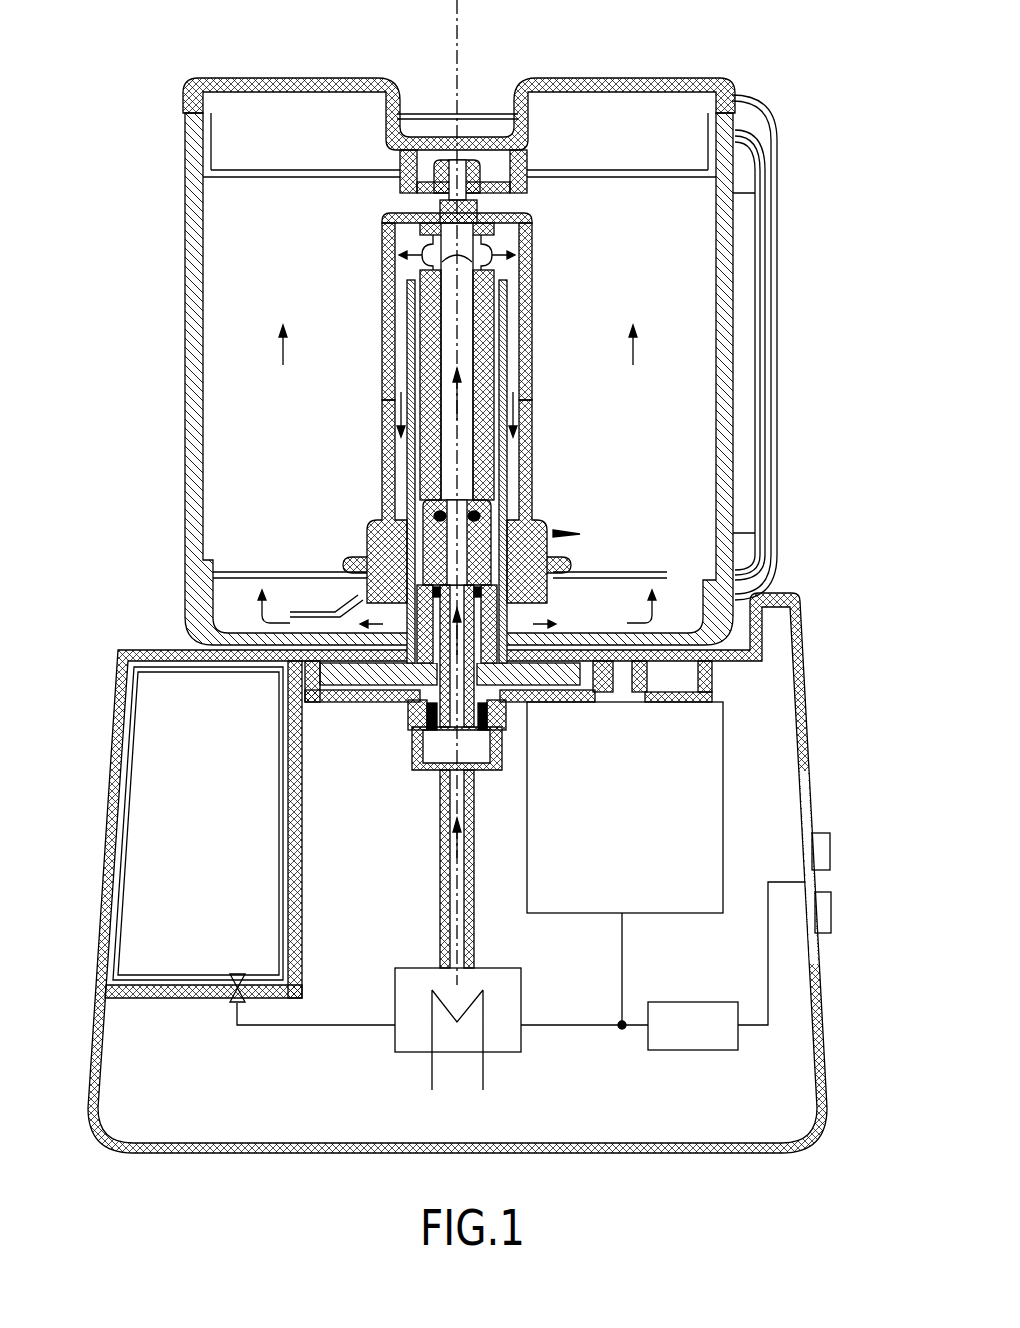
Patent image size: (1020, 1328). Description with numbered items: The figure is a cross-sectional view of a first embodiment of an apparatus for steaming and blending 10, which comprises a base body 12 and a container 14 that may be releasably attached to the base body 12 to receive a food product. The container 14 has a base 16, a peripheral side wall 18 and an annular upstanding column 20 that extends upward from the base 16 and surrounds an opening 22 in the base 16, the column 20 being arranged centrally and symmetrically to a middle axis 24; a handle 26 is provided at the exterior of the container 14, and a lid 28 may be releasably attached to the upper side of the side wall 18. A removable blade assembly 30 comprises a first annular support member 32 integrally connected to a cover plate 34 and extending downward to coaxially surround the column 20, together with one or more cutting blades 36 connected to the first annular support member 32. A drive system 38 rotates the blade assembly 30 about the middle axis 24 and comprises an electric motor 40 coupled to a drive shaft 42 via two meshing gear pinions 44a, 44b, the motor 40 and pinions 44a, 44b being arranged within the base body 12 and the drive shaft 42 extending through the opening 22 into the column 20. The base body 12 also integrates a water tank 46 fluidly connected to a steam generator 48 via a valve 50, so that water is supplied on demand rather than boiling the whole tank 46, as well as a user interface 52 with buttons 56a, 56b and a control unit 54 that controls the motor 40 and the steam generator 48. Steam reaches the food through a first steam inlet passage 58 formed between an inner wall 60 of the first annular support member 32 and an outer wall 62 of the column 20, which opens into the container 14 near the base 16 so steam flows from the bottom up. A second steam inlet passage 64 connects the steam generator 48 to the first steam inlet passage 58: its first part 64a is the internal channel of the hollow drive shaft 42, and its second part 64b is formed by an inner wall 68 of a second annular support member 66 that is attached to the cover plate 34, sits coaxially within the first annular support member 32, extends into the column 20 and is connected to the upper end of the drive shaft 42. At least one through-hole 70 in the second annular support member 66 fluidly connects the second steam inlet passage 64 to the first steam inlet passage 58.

The apparatus for steaming and blending 10 is at (115, 96).
The base body 12 is at (806, 676).
The container 14 is at (181, 292).
The base 16 is at (245, 640).
The peripheral side wall 18 is at (183, 366).
The annular upstanding column 20 is at (410, 348).
The opening 22 is at (412, 664).
The middle axis 24 is at (463, 14).
The handle 26 is at (774, 356).
The lid 28 is at (628, 78).
The blade assembly 30 is at (537, 282).
The first annular support member 32 is at (388, 490).
The cover plate 34 is at (398, 217).
The cutting blades 36 is at (318, 608).
The drive system 38 is at (726, 794).
The electric motor 40 is at (718, 834).
The drive shaft 42 is at (415, 736).
The gear pinion 44a is at (636, 694).
The gear pinion 44b is at (600, 692).
The water tank 46 is at (108, 814).
The steam generator 48 is at (408, 1058).
The valve 50 is at (237, 1005).
The user interface 52 is at (810, 783).
The control unit 54 is at (695, 1052).
The button 56a is at (825, 853).
The button 56b is at (825, 913).
The first steam inlet passage 58 is at (518, 460).
The inner wall 60 is at (398, 243).
The outer wall 62 is at (404, 310).
The second steam inlet passage 64 is at (470, 378).
The first part of the second steam inlet passage 64a is at (447, 697).
The second part of the second steam inlet passage 64b is at (468, 325).
The second annular support member 66 is at (405, 452).
The inner wall 68 is at (437, 378).
The through-hole 70 is at (518, 247).